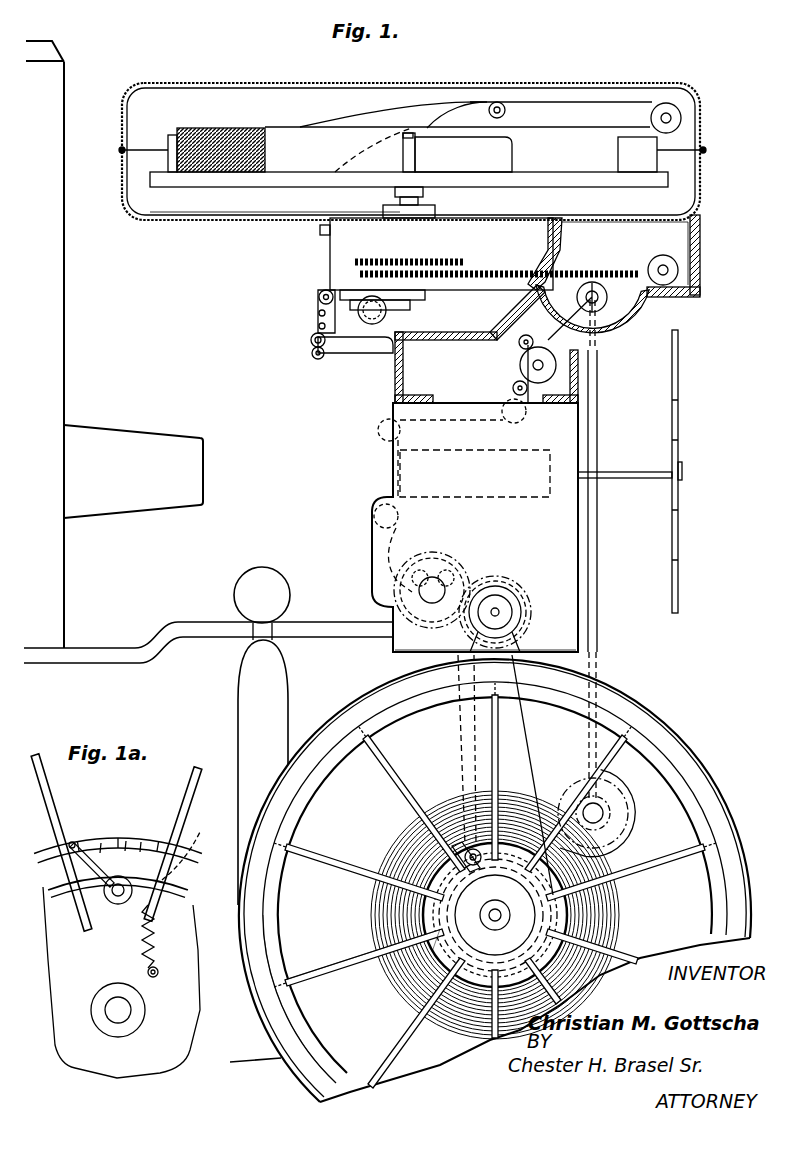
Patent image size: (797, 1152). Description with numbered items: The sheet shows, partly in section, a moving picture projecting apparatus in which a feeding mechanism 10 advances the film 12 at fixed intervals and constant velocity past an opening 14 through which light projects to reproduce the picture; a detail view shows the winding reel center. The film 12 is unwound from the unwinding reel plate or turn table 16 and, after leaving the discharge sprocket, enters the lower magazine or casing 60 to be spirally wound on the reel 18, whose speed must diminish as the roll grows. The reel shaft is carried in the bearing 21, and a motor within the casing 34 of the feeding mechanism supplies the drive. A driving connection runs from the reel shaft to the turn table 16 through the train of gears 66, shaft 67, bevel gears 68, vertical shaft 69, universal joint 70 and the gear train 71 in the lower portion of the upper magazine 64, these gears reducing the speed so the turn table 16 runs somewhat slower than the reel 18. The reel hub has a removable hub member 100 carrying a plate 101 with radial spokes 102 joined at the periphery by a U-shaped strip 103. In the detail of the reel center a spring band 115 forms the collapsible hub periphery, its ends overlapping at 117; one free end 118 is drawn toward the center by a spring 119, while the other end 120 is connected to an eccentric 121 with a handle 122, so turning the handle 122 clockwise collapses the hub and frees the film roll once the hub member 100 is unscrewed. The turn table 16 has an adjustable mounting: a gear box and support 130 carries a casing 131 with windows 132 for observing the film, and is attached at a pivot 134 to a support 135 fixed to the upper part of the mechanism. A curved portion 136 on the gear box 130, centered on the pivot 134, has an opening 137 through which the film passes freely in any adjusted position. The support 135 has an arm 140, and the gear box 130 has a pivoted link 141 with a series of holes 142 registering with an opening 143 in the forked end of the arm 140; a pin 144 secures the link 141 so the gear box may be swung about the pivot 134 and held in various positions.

In FIG. 1, the feeding mechanism 10 is at (562, 428).
In FIG. 1, the moving picture film 12 is at (650, 102).
In FIG. 1, the opening 14 is at (394, 458).
In FIG. 1, the unwinding reel plate or turn table 16 is at (593, 175).
In FIG. 1, the winding reel 18 is at (420, 912).
In FIG. 1, the bearing 21 is at (495, 920).
In FIG. 1, the casing 34 is at (570, 622).
In FIG. 1, the lower magazine or casing 60 is at (640, 698).
In FIG. 1, the upper magazine 64 is at (612, 80).
In FIG. 1, the train of gears 66 is at (605, 843).
In FIG. 1, the shaft 67 is at (622, 808).
In FIG. 1, the bevel gears 68 is at (602, 798).
In FIG. 1, the vertical shaft 69 is at (597, 590).
In FIG. 1, the universal joint 70 is at (600, 293).
In FIG. 1, the gear train 71 is at (497, 270).
In FIG. 1A, the removable hub member 100 is at (165, 1020).
In FIG. 1A, the plate 101 is at (197, 892).
In FIG. 1, the radial spokes 102 is at (334, 966).
In FIG. 1A, the radial spokes 102 is at (192, 772).
In FIG. 1, the U-shaped strip 103 is at (284, 966).
In FIG. 1, the spring band 115 is at (432, 962).
In FIG. 1, the overlapping ends 117 is at (488, 808).
In FIG. 1A, the overlapping ends 117 is at (122, 850).
In FIG. 1A, the free end of band 118 is at (150, 848).
In FIG. 1A, the spring 119 is at (192, 878).
In FIG. 1, the other end of band 120 is at (418, 888).
In FIG. 1A, the other end of band 120 is at (93, 845).
In FIG. 1, the eccentric 121 is at (462, 856).
In FIG. 1A, the eccentric 121 is at (115, 902).
In FIG. 1, the handle 122 is at (452, 849).
In FIG. 1A, the handle 122 is at (78, 845).
In FIG. 1, the gear box and support 130 is at (337, 248).
In FIG. 1, the casing 131 is at (183, 222).
In FIG. 1, the windows 132 is at (262, 62).
In FIG. 1, the pivot 134 is at (594, 303).
In FIG. 1, the support 135 is at (393, 380).
In FIG. 1, the curved portion 136 is at (638, 322).
In FIG. 1, the opening 137 is at (525, 333).
In FIG. 1, the arm 140 is at (355, 342).
In FIG. 1, the pivoted link 141 is at (318, 297).
In FIG. 1, the holes 142 is at (319, 326).
In FIG. 1, the opening 143 is at (315, 342).
In FIG. 1, the pin 144 is at (318, 357).